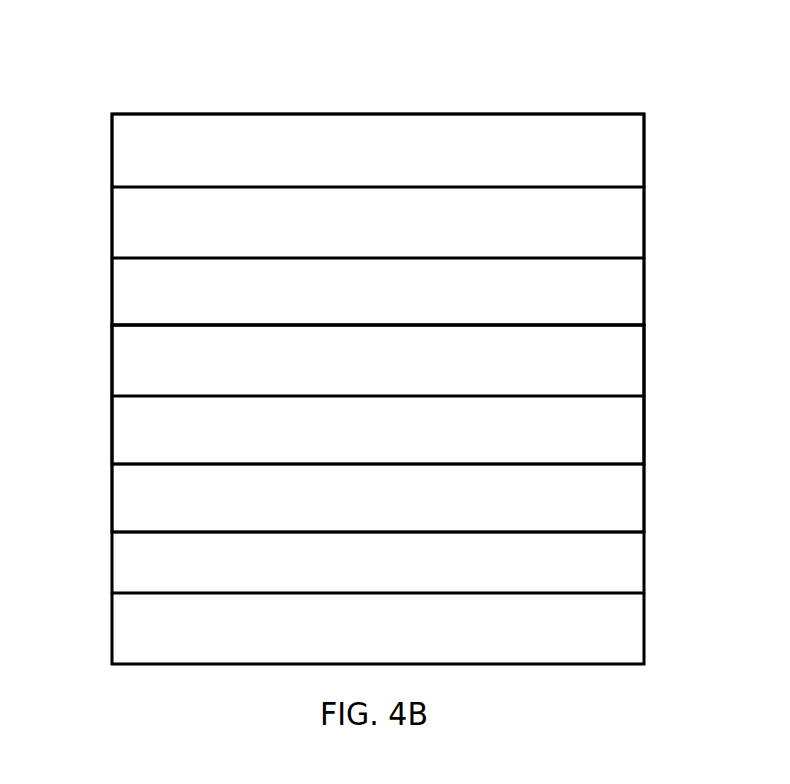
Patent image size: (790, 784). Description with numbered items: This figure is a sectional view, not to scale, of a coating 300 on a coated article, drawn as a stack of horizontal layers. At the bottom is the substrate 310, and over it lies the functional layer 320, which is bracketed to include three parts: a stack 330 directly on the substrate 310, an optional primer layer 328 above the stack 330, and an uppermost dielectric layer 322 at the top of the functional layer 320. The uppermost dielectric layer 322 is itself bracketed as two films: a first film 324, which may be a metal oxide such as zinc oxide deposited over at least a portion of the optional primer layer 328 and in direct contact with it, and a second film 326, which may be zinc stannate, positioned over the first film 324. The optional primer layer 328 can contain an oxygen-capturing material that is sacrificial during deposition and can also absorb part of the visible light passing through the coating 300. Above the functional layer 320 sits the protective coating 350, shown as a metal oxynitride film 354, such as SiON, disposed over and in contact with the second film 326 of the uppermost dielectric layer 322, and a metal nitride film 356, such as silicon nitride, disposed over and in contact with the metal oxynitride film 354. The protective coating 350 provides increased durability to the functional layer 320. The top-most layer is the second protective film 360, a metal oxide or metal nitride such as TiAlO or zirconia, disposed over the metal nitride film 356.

The coating 300 is at (513, 102).
The substrate 310 is at (378, 628).
The functional layer 320 is at (652, 328).
The uppermost dielectric layer 322 is at (103, 325).
The first film 324 is at (378, 430).
The second film 326 is at (378, 360).
The optional primer layer 328 is at (378, 498).
The stack 330 is at (378, 562).
The protective coating 350 is at (652, 115).
The metal oxynitride film 354 is at (378, 291).
The metal nitride film 356 is at (378, 222).
The second protective film 360 is at (378, 150).